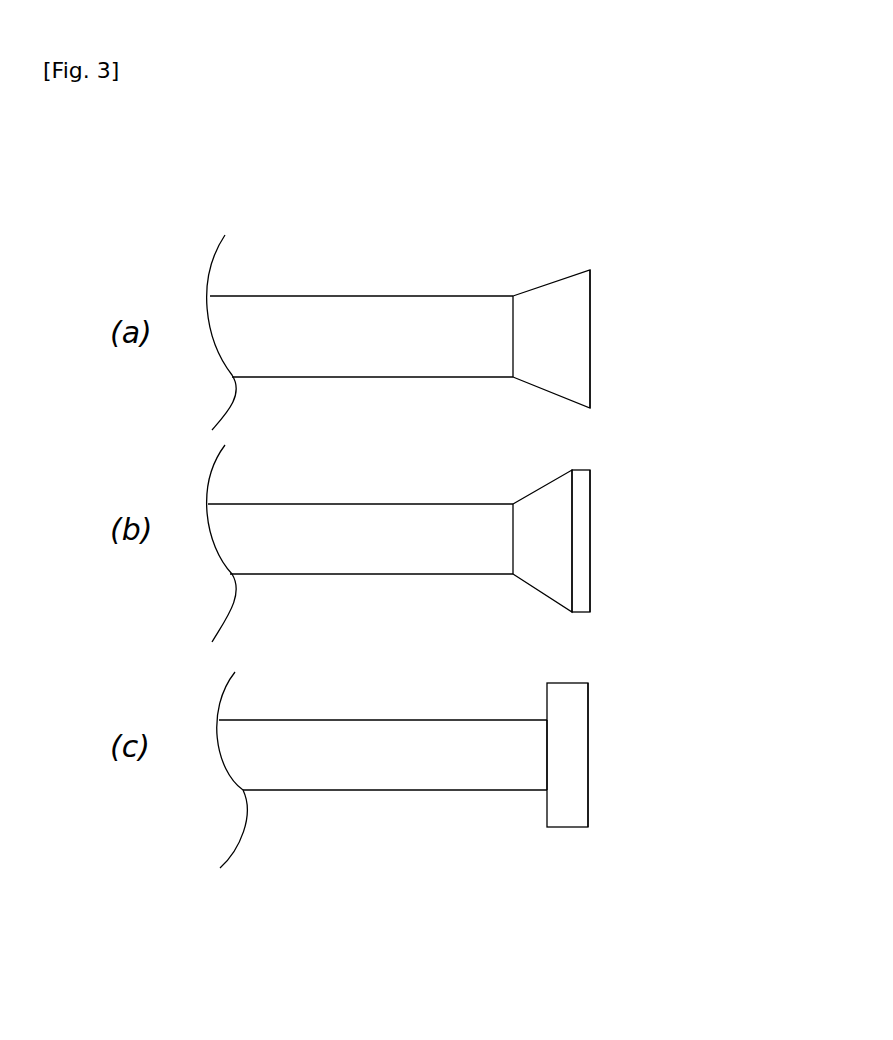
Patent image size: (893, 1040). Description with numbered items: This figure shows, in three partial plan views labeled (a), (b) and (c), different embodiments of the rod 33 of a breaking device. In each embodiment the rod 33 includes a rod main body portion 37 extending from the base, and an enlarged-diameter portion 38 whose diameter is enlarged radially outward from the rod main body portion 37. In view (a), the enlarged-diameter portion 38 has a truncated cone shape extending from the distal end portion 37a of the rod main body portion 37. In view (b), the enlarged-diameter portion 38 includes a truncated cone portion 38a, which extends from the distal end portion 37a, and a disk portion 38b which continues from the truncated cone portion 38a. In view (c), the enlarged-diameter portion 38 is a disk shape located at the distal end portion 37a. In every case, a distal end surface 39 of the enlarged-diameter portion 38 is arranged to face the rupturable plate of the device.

The rod 33 is at (494, 554).
The rod main body portion 37 is at (362, 295).
The distal end portion 37a is at (513, 380).
The enlarged-diameter portion 38 is at (646, 550).
The truncated cone portion 38a is at (545, 478).
The disk portion 38b is at (590, 464).
The distal end surface 39 is at (591, 325).